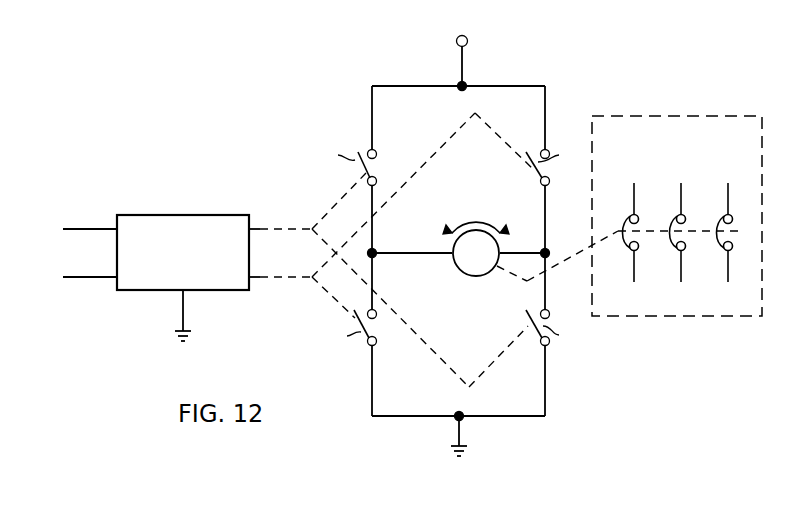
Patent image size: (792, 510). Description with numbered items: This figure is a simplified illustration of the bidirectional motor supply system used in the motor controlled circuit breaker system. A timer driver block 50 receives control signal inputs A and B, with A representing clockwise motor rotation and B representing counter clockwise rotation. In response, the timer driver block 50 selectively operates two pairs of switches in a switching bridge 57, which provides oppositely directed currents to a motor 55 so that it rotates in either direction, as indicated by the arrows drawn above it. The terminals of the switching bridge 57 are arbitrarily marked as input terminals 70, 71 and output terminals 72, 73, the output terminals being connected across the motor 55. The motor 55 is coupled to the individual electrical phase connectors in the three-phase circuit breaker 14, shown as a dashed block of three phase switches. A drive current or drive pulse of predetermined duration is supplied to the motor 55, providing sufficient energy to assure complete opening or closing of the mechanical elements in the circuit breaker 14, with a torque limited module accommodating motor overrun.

The three-phase circuit breaker 14 is at (716, 116).
The timer driver block 50 is at (190, 215).
The motor 55 is at (468, 276).
The switching bridge 57 is at (498, 81).
The input terminal 70 is at (458, 84).
The input terminal 71 is at (458, 414).
The output terminal 72 is at (548, 250).
The output terminal 73 is at (376, 250).